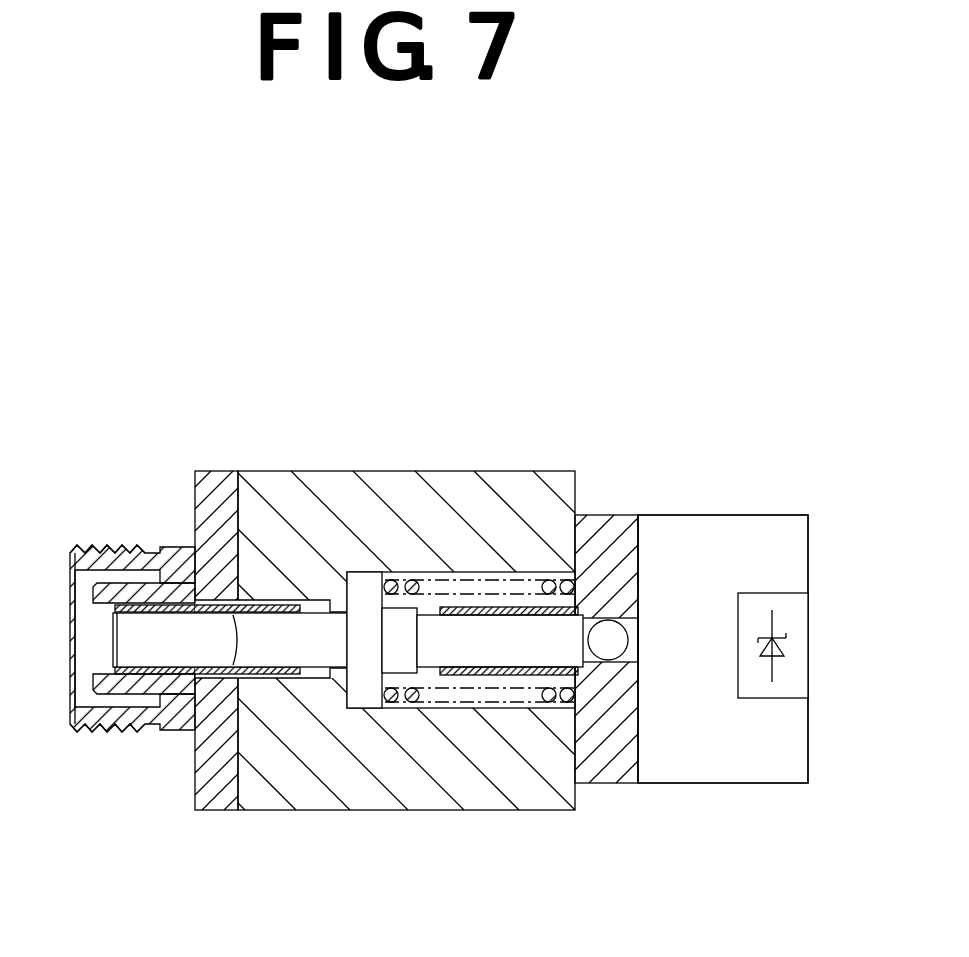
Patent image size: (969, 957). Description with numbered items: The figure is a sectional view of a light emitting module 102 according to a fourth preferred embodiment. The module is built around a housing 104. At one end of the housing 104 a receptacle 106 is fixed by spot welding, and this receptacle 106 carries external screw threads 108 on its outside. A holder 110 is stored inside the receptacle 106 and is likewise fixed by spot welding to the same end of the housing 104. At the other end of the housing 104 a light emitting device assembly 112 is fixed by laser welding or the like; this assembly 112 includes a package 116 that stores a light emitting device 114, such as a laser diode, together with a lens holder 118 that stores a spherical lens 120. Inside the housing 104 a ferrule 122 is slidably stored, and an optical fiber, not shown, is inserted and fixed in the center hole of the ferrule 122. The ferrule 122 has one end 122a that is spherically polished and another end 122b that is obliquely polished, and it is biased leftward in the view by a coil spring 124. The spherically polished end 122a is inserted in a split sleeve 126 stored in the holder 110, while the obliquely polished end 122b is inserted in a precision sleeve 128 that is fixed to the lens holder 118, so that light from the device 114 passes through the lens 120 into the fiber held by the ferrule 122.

The light emitting module 102 is at (397, 418).
The housing 104 is at (290, 471).
The receptacle 106 is at (200, 471).
The external screw threads 108 is at (112, 733).
The holder 110 is at (97, 550).
The light emitting device assembly 112 is at (757, 517).
The light emitting device 114 is at (783, 647).
The package 116 is at (695, 530).
The lens holder 118 is at (612, 535).
The spherical lens 120 is at (618, 647).
The ferrule 122 is at (366, 704).
The one end of the ferrule 122a is at (228, 667).
The other end of the ferrule 122b is at (548, 655).
The coil spring 124 is at (541, 606).
The split sleeve 126 is at (134, 585).
The precision sleeve 128 is at (444, 582).